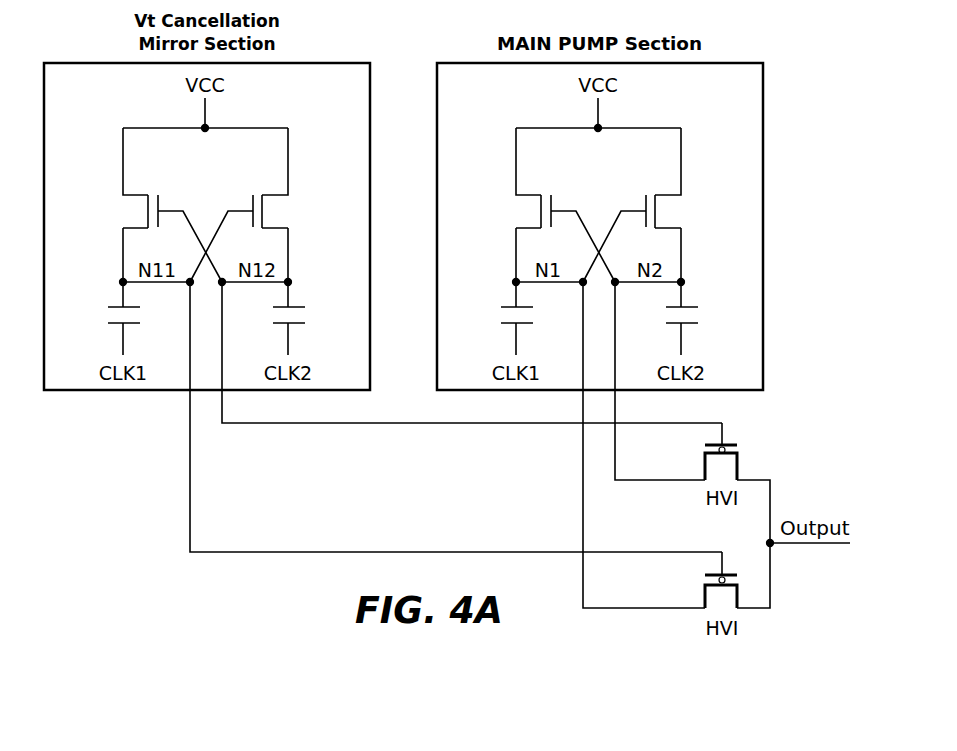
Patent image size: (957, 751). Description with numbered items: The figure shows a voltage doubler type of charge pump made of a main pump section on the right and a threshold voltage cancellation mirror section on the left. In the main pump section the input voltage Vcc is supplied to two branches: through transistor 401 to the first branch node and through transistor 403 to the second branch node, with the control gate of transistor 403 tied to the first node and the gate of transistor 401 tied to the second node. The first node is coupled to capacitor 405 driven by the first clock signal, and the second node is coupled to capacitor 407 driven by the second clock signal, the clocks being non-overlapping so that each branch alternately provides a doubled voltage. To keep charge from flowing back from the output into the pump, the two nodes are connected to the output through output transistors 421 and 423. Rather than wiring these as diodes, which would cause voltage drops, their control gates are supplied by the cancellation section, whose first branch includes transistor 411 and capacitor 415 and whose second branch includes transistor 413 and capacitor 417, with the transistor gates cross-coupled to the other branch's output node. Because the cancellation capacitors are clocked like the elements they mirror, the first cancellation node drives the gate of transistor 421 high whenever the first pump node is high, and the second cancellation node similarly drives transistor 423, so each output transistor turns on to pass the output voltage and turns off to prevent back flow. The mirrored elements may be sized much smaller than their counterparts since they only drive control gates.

The transistor 401 is at (528, 190).
The transistor 403 is at (670, 190).
The capacitor 405 is at (507, 305).
The capacitor 407 is at (690, 305).
The transistor 411 is at (135, 190).
The transistor 413 is at (277, 190).
The capacitor 415 is at (114, 305).
The capacitor 417 is at (297, 305).
The output transistor 421 is at (739, 598).
The output transistor 423 is at (739, 467).